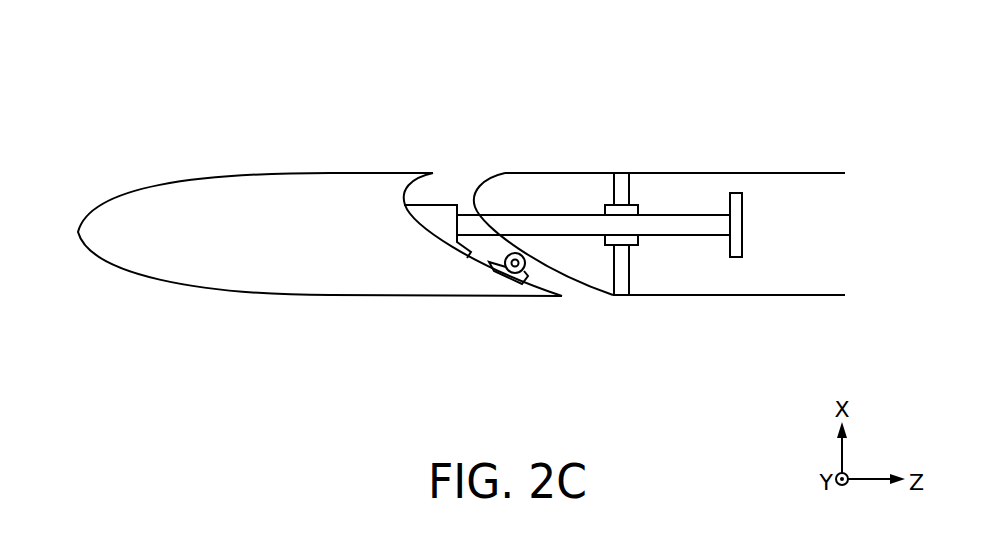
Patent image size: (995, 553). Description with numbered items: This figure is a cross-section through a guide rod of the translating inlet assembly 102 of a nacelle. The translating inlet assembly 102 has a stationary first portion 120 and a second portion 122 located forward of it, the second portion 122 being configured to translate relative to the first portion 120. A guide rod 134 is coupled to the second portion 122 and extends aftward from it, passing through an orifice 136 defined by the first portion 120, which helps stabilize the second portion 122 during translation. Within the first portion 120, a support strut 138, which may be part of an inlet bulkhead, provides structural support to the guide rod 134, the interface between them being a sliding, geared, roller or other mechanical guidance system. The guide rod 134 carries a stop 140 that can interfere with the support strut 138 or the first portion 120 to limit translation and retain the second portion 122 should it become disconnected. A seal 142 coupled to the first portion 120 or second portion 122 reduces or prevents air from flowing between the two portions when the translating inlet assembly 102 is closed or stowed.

The translating inlet assembly 102 is at (210, 107).
The first portion 120 is at (735, 275).
The second portion 122 is at (287, 190).
The guide rod 134 is at (682, 223).
The orifice 136 is at (487, 202).
The support strut 138 is at (622, 192).
The stop 140 is at (733, 192).
The seal 142 is at (508, 270).